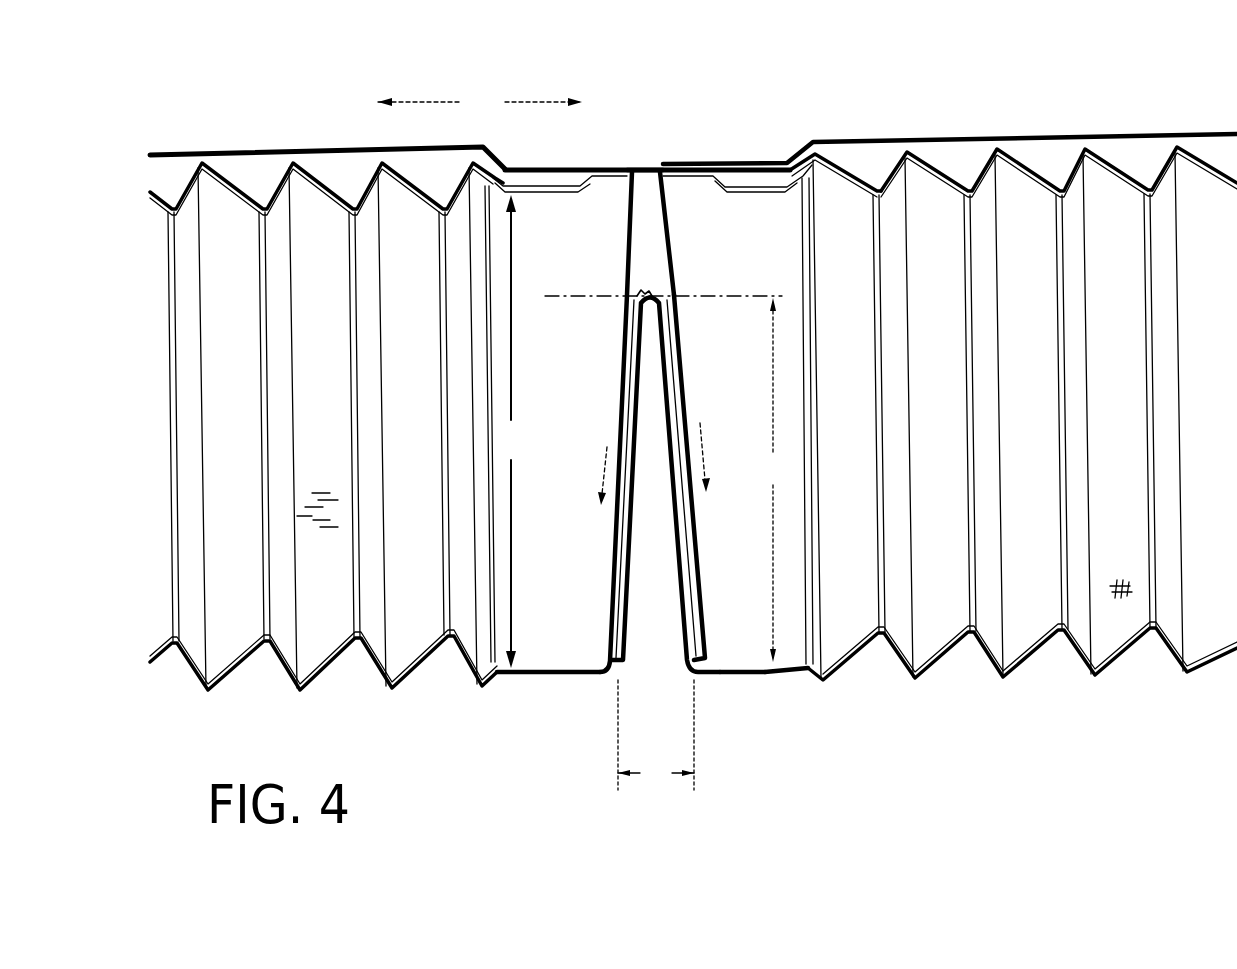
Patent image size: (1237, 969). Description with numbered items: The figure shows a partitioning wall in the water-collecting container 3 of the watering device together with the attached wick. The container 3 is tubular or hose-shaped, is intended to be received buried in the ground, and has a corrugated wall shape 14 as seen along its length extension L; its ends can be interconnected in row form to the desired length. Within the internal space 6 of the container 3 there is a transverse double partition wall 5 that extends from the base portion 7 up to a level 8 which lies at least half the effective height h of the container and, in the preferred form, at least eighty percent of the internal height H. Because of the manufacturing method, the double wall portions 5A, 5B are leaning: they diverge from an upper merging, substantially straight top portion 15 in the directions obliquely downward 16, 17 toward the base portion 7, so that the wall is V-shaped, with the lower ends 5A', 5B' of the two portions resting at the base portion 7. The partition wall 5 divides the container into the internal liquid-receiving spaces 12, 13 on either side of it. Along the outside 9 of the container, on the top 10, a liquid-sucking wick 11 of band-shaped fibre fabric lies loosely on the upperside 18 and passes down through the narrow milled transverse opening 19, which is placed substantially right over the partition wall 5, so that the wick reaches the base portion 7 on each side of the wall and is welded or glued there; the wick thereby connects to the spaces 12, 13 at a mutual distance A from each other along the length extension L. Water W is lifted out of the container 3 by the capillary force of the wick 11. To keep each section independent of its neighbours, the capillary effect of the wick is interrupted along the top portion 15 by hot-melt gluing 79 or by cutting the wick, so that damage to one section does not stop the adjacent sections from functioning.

The water-collecting container 3 is at (356, 679).
The transverse double partition wall 5 is at (690, 338).
The double wall portion 5A is at (588, 422).
The double wall portion 5B is at (712, 477).
The lower end of first fold leg 5A' is at (592, 479).
The lower end of second fold leg 5B' is at (716, 478).
The internal space 6 is at (393, 402).
The base portion 7 is at (797, 668).
The level 8 is at (545, 320).
The outside 9 is at (1118, 600).
The top 10 is at (821, 160).
The liquid-sucking wick 11 is at (222, 152).
The internal liquid-receiving space 12 is at (549, 647).
The internal liquid-receiving space 13 is at (737, 648).
The corrugated wall shape 14 is at (984, 673).
The top portion 15 is at (663, 277).
The obliquely downward direction 16 is at (583, 476).
The obliquely downward direction 17 is at (720, 457).
The upperside 18 is at (1162, 163).
The opening 19 is at (654, 160).
The hot-melt gluing 79 is at (643, 290).
The water W is at (304, 495).
The internal height H is at (512, 431).
The effective height h is at (769, 480).
The mutual distance A is at (656, 736).
The length extension L is at (480, 102).